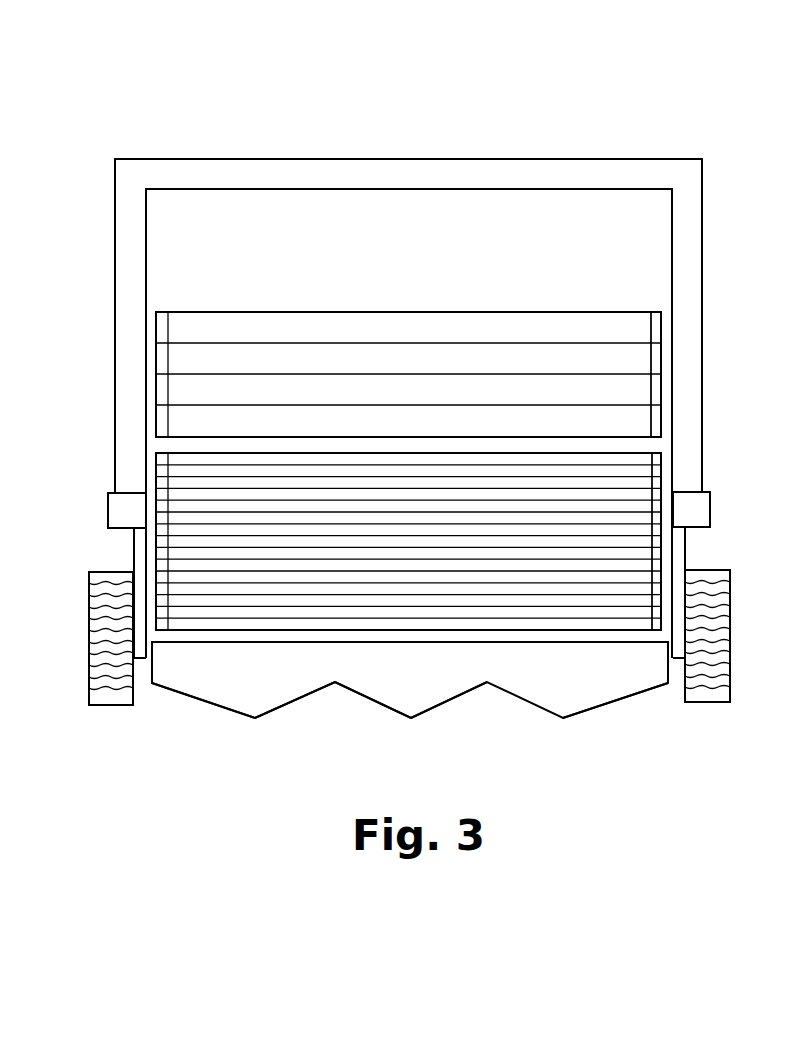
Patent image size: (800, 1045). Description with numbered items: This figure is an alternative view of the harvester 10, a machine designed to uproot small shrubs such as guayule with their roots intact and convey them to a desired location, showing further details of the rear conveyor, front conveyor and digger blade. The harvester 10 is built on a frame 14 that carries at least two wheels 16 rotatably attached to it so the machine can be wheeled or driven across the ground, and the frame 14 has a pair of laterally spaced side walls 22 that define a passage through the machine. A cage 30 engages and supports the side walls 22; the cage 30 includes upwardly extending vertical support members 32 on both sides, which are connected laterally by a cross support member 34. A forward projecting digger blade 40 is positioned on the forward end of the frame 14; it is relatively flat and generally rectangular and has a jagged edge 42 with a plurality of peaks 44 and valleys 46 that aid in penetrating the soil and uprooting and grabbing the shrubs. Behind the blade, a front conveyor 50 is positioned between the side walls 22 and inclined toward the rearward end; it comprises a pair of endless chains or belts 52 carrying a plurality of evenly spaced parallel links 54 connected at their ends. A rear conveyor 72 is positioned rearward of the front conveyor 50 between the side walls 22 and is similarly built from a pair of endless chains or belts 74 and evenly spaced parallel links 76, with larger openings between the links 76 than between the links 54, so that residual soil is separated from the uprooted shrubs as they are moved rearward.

The harvester 10 is at (170, 98).
The cage 30 is at (678, 105).
The vertical support members 32 is at (127, 228).
The cross support members 34 is at (367, 175).
The frame 14 is at (696, 507).
The side walls 22 is at (137, 548).
The wheels 16 is at (100, 606).
The rear conveyor 72 is at (128, 333).
The endless chains or belts 74 is at (158, 381).
The parallel links 76 is at (628, 338).
The front conveyor 50 is at (128, 473).
The endless chains or belts 52 is at (655, 468).
The parallel links 54 is at (635, 455).
The digger blade 40 is at (600, 690).
The jagged edge 42 is at (205, 702).
The peaks 44 is at (255, 718).
The valleys 46 is at (335, 685).